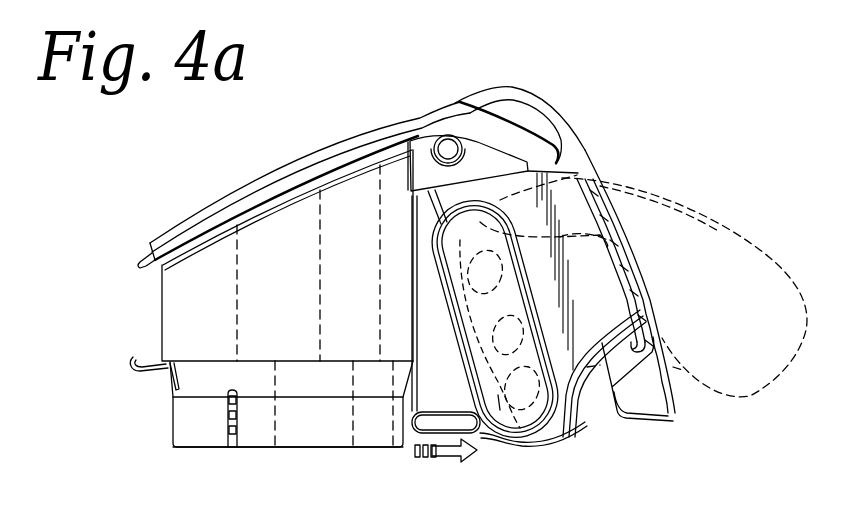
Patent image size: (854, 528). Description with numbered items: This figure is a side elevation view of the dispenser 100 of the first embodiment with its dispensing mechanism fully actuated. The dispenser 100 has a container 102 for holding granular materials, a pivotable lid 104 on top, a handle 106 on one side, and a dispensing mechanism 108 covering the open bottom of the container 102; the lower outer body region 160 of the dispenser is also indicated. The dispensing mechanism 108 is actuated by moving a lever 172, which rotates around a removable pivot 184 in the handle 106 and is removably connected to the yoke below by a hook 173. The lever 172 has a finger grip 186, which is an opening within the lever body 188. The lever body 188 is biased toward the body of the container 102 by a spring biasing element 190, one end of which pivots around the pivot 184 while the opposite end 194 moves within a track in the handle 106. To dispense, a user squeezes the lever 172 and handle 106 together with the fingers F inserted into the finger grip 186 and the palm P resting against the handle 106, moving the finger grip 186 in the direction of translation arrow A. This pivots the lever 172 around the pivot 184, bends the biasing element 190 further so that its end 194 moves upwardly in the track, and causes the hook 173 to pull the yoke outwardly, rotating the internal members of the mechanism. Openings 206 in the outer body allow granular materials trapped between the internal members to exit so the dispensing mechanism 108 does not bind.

The dispenser 100 is at (618, 132).
The container 102 is at (162, 312).
The pivotable lid 104 is at (258, 176).
The handle 106 is at (653, 408).
The dispensing mechanism 108 is at (150, 409).
The lower trim 160 is at (150, 444).
The lever 172 is at (516, 186).
The hook 173 is at (475, 443).
The removable pivot 184 is at (447, 147).
The finger grip 186 is at (545, 358).
The lever body 188 is at (593, 283).
The biasing element 190 is at (597, 177).
The opposite end of biasing element 194 is at (650, 326).
The openings 206 is at (237, 390).
The user's palm P is at (643, 243).
The translation arrow A is at (461, 446).
The user's fingers F is at (498, 395).